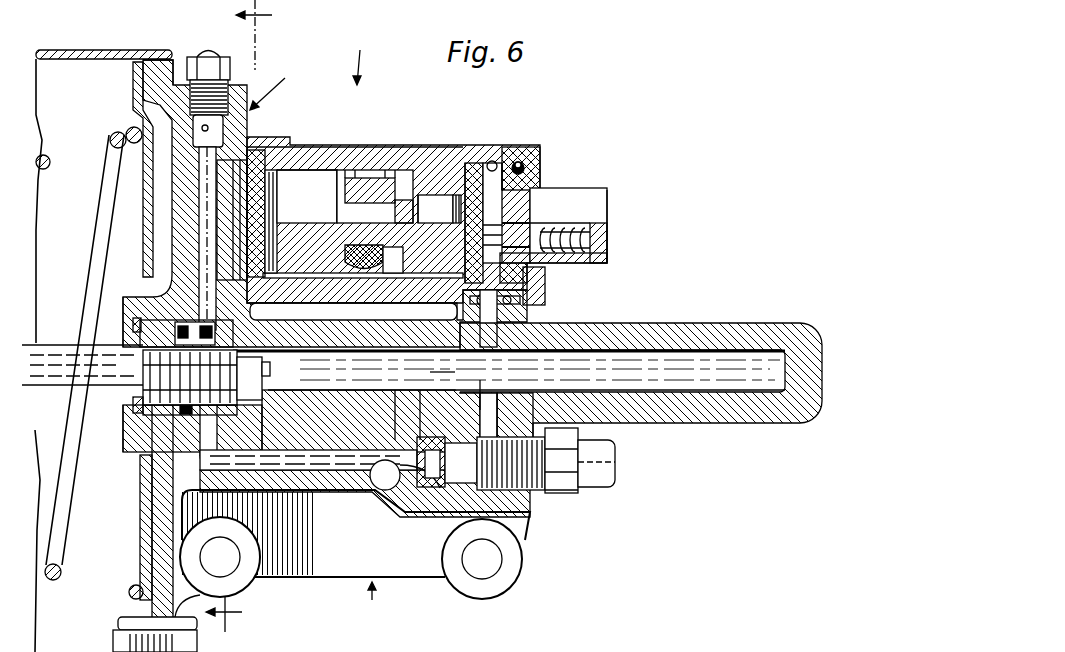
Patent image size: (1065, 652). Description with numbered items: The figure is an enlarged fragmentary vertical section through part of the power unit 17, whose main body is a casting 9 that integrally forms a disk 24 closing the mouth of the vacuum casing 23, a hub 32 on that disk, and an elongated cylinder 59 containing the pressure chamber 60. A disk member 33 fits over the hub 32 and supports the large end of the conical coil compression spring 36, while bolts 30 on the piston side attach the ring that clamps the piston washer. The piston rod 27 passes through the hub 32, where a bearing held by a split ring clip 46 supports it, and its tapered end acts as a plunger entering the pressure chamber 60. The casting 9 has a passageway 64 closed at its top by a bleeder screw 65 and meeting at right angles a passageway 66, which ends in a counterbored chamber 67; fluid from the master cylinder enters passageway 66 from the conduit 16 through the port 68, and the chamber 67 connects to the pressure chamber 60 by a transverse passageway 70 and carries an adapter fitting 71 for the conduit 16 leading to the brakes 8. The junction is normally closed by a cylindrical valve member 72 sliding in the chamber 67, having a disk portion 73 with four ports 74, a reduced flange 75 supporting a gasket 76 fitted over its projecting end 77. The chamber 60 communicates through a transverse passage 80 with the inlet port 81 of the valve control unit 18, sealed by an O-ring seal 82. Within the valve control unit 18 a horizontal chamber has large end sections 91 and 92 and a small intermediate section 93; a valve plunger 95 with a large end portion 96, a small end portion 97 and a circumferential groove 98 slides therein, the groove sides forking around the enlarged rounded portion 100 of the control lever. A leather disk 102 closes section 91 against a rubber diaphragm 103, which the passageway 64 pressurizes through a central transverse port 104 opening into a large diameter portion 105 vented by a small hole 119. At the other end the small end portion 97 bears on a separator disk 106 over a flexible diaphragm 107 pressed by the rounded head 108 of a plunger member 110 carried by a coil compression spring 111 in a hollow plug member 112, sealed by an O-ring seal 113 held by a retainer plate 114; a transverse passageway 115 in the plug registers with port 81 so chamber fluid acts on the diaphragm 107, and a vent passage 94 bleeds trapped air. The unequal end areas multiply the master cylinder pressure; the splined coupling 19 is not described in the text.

The brakes 8 is at (244, 316).
The casting 9 is at (328, 340).
The conduit 16 is at (597, 443).
The power unit 17 is at (363, 56).
The valve control unit 18 is at (405, 140).
The splined coupling 19 is at (316, 395).
The casing 23 is at (92, 50).
The disk 24 is at (165, 58).
The piston rod 27 is at (48, 347).
The bolts 30 is at (137, 634).
The hub 32 is at (128, 425).
The disk member 33 is at (133, 85).
The conical coil compression spring 36 is at (108, 180).
The split ring clip 46 is at (133, 403).
The cylinder 59 is at (690, 322).
The pressure chamber 60 is at (509, 370).
The passageway 64 is at (205, 262).
The bleeder screw 65 is at (207, 57).
The passageway 66 is at (290, 472).
The counterbored chamber 67 is at (420, 482).
The port 68 is at (362, 472).
The transverse passageway 70 is at (489, 385).
The adapter fitting 71 is at (575, 497).
The valve member 72 is at (470, 440).
The disk portion 73 is at (440, 487).
The ports 74 is at (500, 514).
The flange 75 is at (420, 445).
The gasket 76 is at (392, 440).
The projecting end 77 is at (378, 490).
The transverse passage 80 is at (500, 322).
The inlet port 81 is at (443, 358).
The O-ring seal 82 is at (505, 318).
The large diameter end section 91 is at (352, 178).
The large diameter end section 92 is at (506, 178).
The small diameter intermediate section 93 is at (420, 195).
The vent passage 94 is at (439, 209).
The valve plunger 95 is at (307, 196).
The large diameter end portion 96 is at (312, 175).
The small diameter end portion 97 is at (443, 212).
The circumferential groove 98 is at (372, 205).
The enlarged rounded portion 100 is at (363, 245).
The disk 102 is at (277, 185).
The diaphragm 103 is at (255, 163).
The central transverse port 104 is at (227, 220).
The large diameter portion 105 is at (307, 196).
The separator disk 106 is at (489, 160).
The flexible diaphragm 107 is at (500, 165).
The rounded head 108 is at (515, 226).
The plunger member 110 is at (560, 228).
The coil compression spring 111 is at (607, 232).
The hollow plug member 112 is at (600, 214).
The O-ring seal 113 is at (524, 170).
The retainer plate 114 is at (548, 296).
The transverse passageway 115 is at (530, 271).
The small hole 119 is at (512, 200).